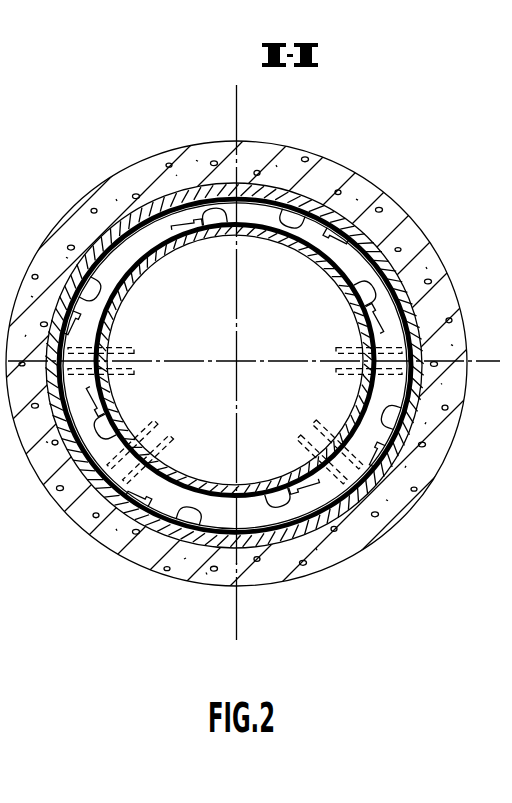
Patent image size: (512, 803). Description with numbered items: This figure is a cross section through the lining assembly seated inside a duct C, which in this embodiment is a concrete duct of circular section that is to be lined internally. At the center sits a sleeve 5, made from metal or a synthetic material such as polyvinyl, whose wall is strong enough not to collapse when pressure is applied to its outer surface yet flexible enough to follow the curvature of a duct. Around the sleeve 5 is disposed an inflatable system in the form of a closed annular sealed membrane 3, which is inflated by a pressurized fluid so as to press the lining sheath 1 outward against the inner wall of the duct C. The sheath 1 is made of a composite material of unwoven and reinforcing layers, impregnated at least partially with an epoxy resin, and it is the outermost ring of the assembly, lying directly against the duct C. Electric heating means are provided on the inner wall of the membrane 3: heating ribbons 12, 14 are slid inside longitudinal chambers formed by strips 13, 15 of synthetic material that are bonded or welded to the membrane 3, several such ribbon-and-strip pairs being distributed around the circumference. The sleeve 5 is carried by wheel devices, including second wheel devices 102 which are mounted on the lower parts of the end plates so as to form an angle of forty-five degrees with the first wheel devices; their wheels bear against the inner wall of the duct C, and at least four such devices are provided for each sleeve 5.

The lining sheath 1 is at (381, 260).
The closed annular sealed membrane 3 is at (158, 202).
The sleeve 5 is at (276, 235).
The duct C is at (374, 202).
The heating ribbon 12 is at (318, 213).
The strip 13 is at (303, 210).
The heating ribbon 14 is at (212, 232).
The strip 15 is at (222, 235).
The second wheel device 102 is at (398, 345).